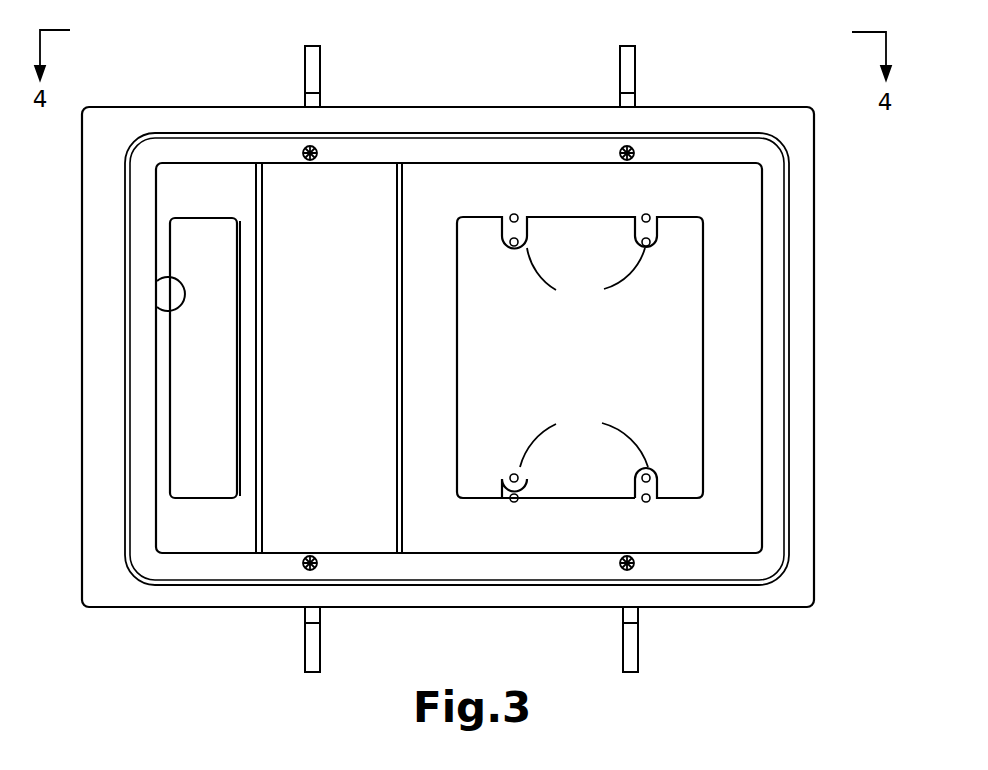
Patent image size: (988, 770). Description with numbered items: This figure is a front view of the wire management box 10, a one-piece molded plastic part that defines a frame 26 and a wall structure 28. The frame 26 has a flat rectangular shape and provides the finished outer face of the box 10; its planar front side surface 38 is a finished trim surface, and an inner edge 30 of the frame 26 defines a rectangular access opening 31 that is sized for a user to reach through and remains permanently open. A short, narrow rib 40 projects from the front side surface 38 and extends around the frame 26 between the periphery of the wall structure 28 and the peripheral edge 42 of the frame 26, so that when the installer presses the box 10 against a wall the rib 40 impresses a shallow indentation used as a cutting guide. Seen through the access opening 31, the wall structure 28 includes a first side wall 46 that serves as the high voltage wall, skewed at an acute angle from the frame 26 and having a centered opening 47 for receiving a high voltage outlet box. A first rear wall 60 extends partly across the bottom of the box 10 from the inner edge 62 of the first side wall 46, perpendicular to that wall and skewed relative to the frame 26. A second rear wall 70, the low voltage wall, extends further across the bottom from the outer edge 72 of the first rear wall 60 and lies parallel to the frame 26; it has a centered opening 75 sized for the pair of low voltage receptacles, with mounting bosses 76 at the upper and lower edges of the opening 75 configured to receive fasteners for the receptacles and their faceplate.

The wire management box 10 is at (66, 229).
The frame 26 is at (108, 130).
The wall structure 28 is at (195, 184).
The inner edge 30 is at (165, 306).
The access opening 31 is at (150, 362).
The front side surface 38 is at (100, 377).
The rib 40 is at (788, 292).
The peripheral edge 42 is at (312, 58).
The first side wall 46 is at (162, 408).
The opening 47 is at (175, 496).
The first rear wall 60 is at (297, 515).
The inner edge 62 is at (262, 390).
The second rear wall 70 is at (483, 522).
The outer edge 72 is at (397, 435).
The opening 75 is at (576, 505).
The mounting bosses 76 is at (584, 357).